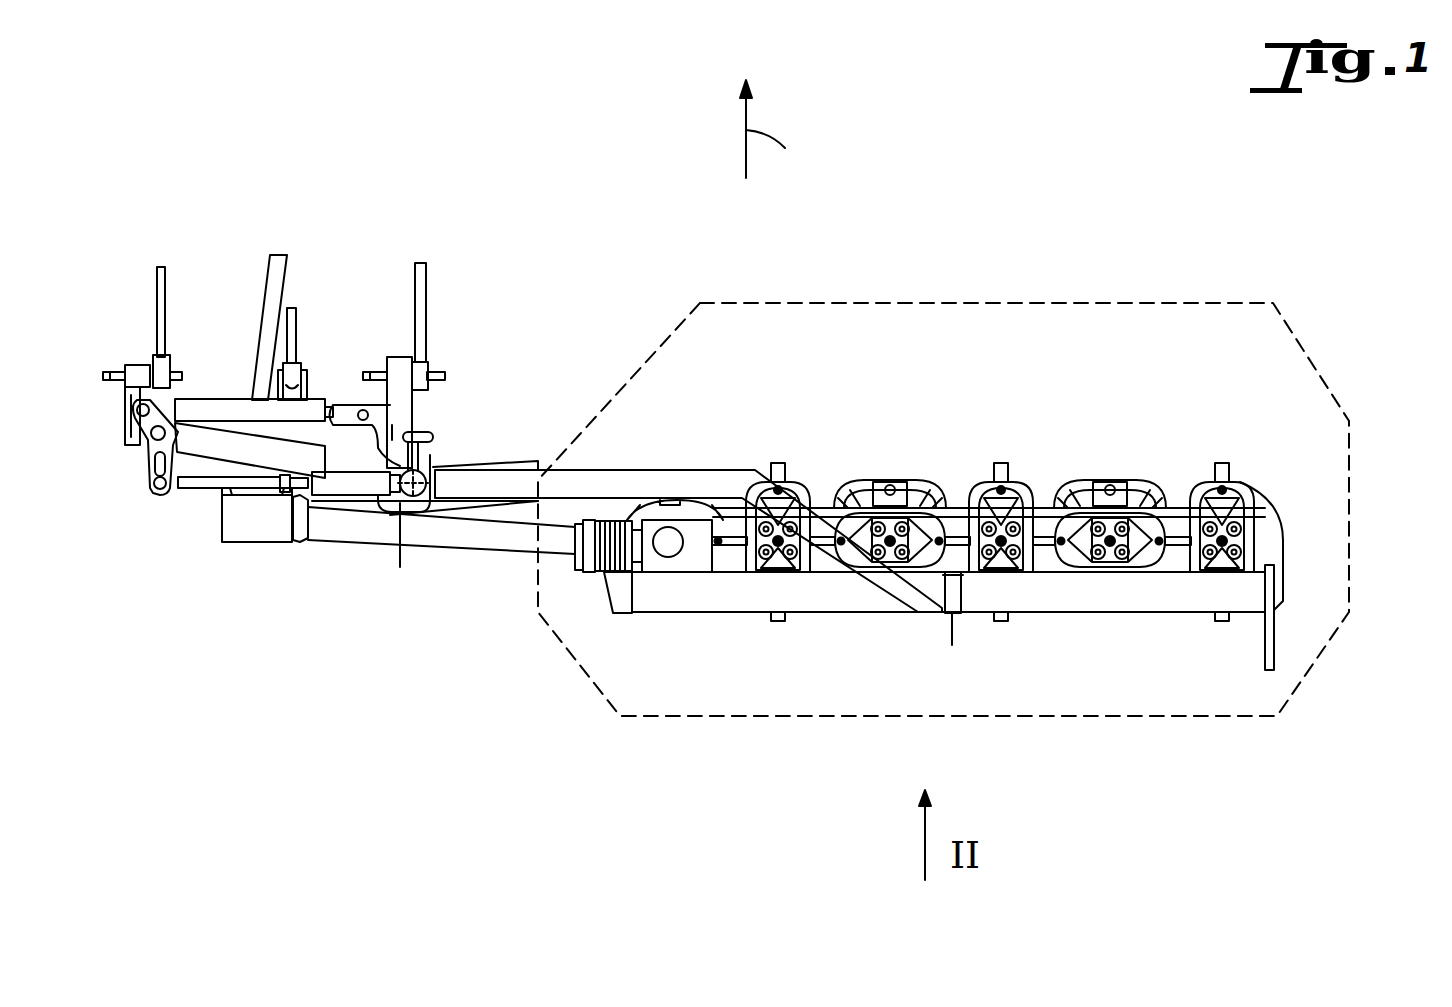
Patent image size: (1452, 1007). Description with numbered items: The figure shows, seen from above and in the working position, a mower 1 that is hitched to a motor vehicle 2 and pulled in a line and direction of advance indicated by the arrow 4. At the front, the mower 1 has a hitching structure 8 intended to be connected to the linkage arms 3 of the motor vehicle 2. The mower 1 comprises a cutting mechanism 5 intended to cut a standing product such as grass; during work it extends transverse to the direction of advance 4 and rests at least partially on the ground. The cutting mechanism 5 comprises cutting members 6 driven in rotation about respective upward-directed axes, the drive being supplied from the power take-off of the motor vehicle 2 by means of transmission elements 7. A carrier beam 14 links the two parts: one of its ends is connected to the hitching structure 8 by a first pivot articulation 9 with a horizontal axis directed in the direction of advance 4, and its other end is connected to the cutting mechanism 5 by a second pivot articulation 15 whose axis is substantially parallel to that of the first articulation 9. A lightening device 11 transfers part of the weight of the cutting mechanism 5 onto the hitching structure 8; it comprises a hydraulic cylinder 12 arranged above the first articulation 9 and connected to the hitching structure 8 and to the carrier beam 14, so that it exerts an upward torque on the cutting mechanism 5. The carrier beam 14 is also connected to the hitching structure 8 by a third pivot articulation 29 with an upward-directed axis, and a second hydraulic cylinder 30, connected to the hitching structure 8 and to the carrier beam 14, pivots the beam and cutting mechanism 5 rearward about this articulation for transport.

The mower 1 is at (455, 712).
The motor vehicle 2 is at (326, 343).
The linkage arms 3 is at (157, 310).
The direction of advance 4 is at (770, 129).
The cutting mechanism 5 is at (1275, 300).
The cutting members 6 is at (1083, 503).
The transmission elements 7 is at (264, 308).
The hitching structure 8 is at (125, 445).
The first pivot articulation 9 is at (402, 558).
The lightening device 11 is at (183, 510).
The hydraulic cylinder 12 is at (357, 497).
The carrier beam 14 is at (667, 470).
The second pivot articulation 15 is at (957, 640).
The third pivot articulation 29 is at (417, 480).
The second hydraulic cylinder 30 is at (232, 398).